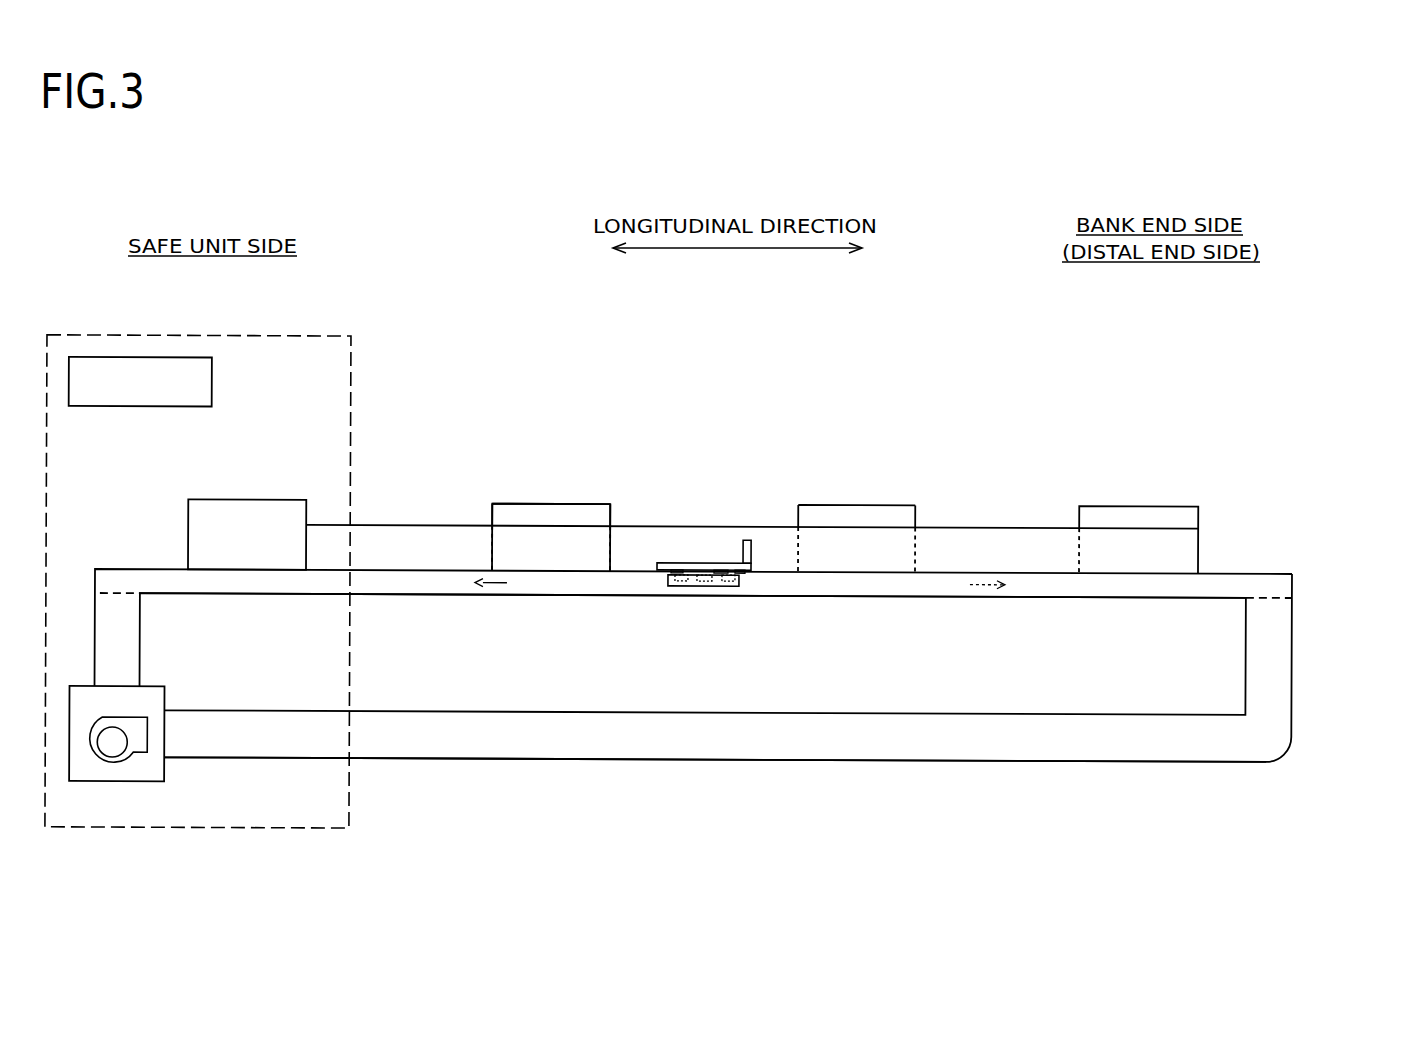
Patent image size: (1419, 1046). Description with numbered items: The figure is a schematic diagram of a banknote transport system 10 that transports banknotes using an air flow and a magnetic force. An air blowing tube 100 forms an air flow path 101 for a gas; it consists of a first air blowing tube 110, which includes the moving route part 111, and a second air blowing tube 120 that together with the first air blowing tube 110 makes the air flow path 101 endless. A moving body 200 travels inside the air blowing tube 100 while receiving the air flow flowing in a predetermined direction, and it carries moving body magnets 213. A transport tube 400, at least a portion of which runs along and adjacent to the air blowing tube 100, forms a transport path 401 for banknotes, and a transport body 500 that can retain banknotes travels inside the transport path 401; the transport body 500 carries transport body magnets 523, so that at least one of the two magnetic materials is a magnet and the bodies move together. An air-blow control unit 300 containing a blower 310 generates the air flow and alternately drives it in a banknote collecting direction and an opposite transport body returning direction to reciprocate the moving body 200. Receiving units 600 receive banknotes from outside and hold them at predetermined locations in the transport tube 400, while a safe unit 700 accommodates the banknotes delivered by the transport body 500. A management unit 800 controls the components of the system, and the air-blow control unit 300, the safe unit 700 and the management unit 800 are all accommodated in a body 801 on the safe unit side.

The banknote transport system 10 is at (962, 336).
The air blowing tube 100 is at (754, 663).
The air flow path 101 is at (993, 708).
The first air blowing tube 110 is at (719, 628).
The moving route part 111 is at (845, 594).
The second air blowing tube 120 is at (754, 665).
The moving body 200 is at (733, 606).
The moving body magnets 213 is at (700, 584).
The air-blow control unit 300 is at (130, 707).
The blower 310 is at (129, 716).
The transport tube 400 is at (935, 521).
The transport path 401 is at (1003, 531).
The transport body 500 is at (708, 526).
The transport body magnets 523 is at (693, 561).
The receiving units 600 is at (566, 500).
The safe unit 700 is at (245, 500).
The management unit 800 is at (212, 364).
The body 801 is at (275, 336).